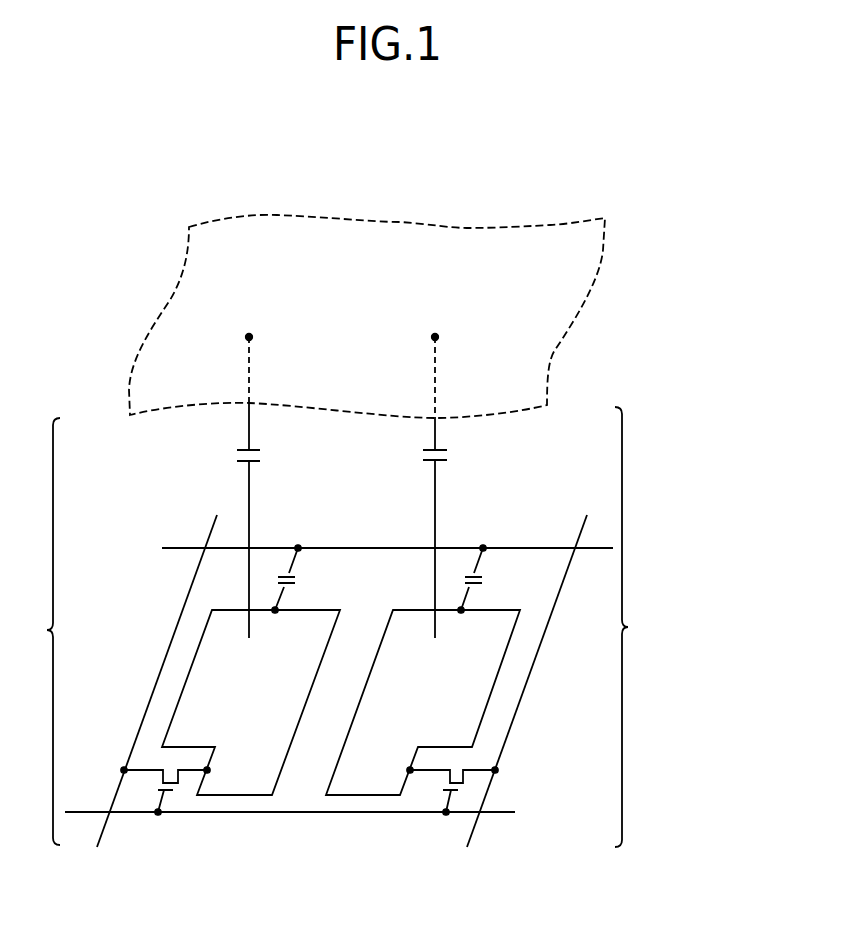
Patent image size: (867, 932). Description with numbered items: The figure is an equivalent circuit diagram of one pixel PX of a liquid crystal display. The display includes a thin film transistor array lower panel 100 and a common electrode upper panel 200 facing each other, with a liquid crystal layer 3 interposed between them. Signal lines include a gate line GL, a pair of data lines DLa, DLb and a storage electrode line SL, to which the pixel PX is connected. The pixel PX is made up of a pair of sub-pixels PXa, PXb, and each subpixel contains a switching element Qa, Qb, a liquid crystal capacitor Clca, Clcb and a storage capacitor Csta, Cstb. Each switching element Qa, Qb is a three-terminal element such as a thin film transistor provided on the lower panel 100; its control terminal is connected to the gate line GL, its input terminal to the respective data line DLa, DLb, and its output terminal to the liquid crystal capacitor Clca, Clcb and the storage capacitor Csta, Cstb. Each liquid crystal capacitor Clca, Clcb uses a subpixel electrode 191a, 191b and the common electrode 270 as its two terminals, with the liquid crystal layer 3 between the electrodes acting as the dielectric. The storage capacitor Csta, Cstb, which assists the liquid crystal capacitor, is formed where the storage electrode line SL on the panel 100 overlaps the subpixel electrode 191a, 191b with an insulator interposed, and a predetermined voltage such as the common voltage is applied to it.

The common electrode 270 is at (597, 268).
The common electrode (upper) panel 200 is at (427, 316).
The liquid crystal layer 3 is at (477, 486).
The thin film transistor array (lower) panel 100 is at (378, 654).
The subpixel electrode 191a is at (238, 797).
The subpixel electrode 191b is at (498, 673).
The storage electrode line SL is at (370, 547).
The gate line GL is at (308, 812).
The data line DLa is at (167, 667).
The data line DLb is at (536, 667).
The switching element Qa is at (165, 791).
The switching element Qb is at (452, 791).
The liquid crystal capacitor Clca is at (272, 520).
The liquid crystal capacitor Clcb is at (459, 528).
The storage capacitor Csta is at (310, 579).
The storage capacitor Cstb is at (496, 579).
The pixel PX is at (355, 832).
The sub-pixel PXa is at (31, 631).
The sub-pixel PXb is at (646, 627).